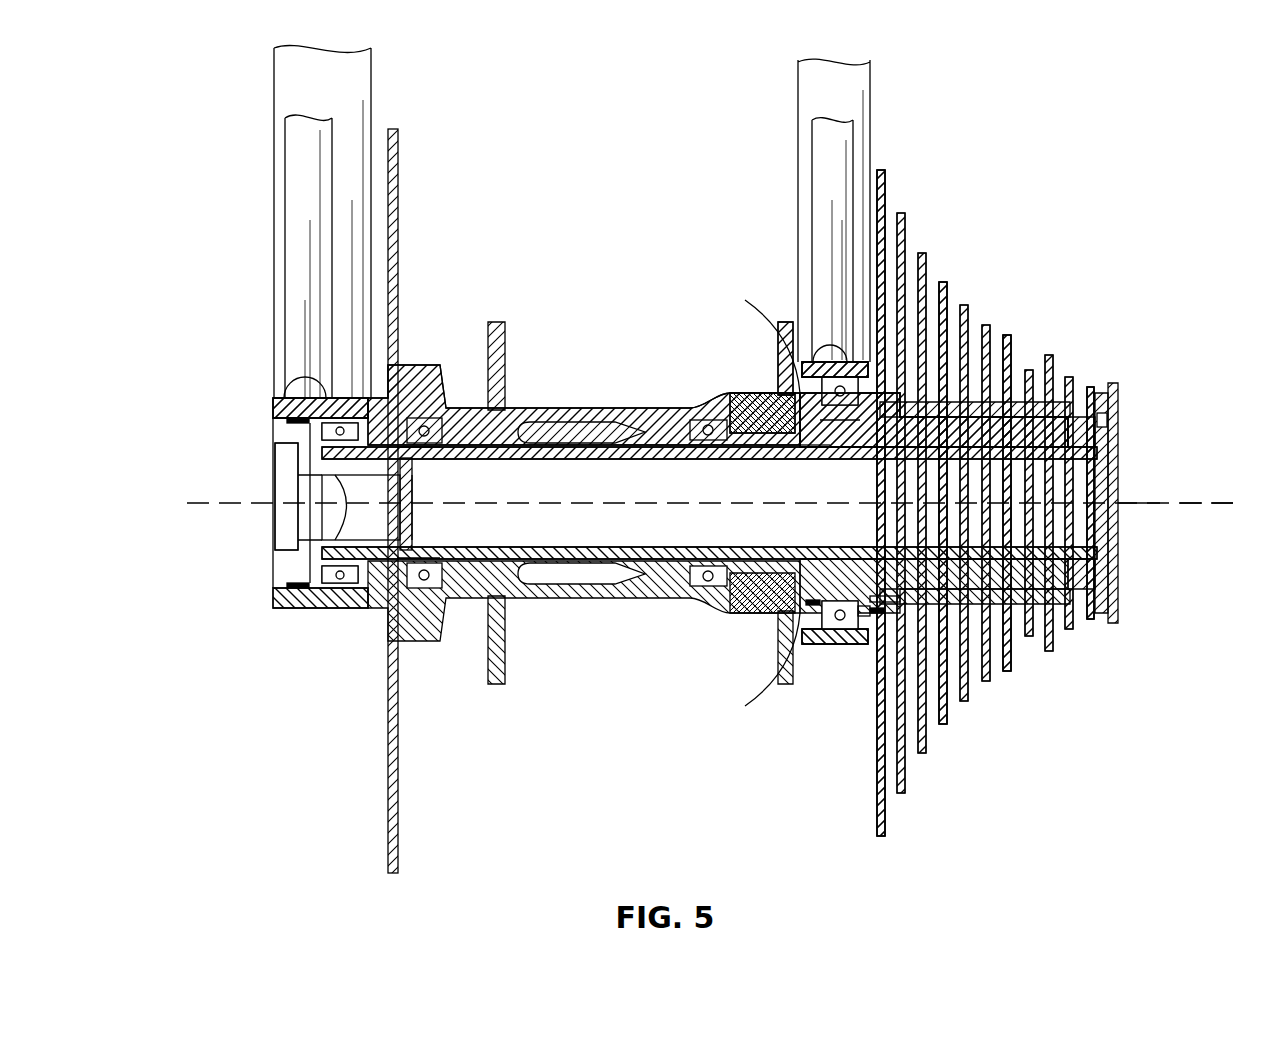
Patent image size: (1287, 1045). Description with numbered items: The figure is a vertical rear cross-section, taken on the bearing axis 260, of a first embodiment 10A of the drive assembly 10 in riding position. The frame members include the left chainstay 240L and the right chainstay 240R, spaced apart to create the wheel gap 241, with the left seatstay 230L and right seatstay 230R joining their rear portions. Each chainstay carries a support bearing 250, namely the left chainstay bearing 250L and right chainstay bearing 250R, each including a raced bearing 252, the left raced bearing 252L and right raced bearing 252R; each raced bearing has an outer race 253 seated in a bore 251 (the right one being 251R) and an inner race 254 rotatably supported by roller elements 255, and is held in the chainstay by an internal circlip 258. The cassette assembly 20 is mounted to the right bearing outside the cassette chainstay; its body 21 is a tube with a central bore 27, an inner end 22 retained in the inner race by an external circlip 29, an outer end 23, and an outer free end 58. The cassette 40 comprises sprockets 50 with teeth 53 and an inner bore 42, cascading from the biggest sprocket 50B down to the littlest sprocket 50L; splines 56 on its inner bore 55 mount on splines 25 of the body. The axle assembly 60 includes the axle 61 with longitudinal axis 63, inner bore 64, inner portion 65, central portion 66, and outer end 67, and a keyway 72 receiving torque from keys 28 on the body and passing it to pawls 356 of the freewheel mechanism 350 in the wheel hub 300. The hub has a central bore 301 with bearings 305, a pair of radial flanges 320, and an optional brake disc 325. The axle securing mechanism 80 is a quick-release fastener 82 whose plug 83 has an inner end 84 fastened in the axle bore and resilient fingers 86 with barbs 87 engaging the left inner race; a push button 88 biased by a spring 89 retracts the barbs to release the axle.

The drive assembly 10 is at (1126, 240).
The first embodiment of drive assembly 10A is at (1150, 267).
The cassette assembly 20 is at (1158, 305).
The cassette body 21 is at (993, 438).
The inner end of cassette body 22 is at (836, 430).
The outer end of body 23 is at (1118, 345).
The splines on outer surface of body 25 is at (956, 414).
The central bore of cassette body 27 is at (1050, 440).
The splines or keys on inner end of body 28 is at (805, 446).
The external circlip 29 is at (778, 365).
The cassette 40 is at (958, 268).
The inner bore of sprockets 42 is at (1018, 438).
The sprocket 50 is at (886, 186).
The biggest sprocket 50B is at (884, 172).
The littlest sprocket 50L is at (1098, 420).
The teeth 53 is at (946, 300).
The inner bore of cassette 55 is at (950, 462).
The splines on cassette inner bore 56 is at (935, 410).
The outer free end of cassette body 58 is at (1110, 410).
The axle assembly 60 is at (1173, 434).
The axle 61 is at (612, 538).
The longitudinal axis 63 is at (1157, 507).
The inner bore of axle 64 is at (848, 538).
The inner portion of axle 65 is at (410, 578).
The central portion of axle 66 is at (700, 545).
The outer end of axle 67 is at (1052, 557).
The keyway 72 is at (530, 447).
The axle securing mechanism 80 is at (166, 473).
The quick-release fastener 82 is at (166, 504).
The plug 83 is at (455, 496).
The inner end of plug 84 is at (412, 536).
The resilient fingers 86 is at (345, 500).
The barbs 87 is at (306, 472).
The push button 88 is at (280, 480).
The spring 89 is at (292, 398).
The left seatstay 230L is at (292, 160).
The right seatstay 230R is at (848, 132).
The left chainstay 240L is at (290, 90).
The right chainstay 240R is at (858, 88).
The wheel gap 241 is at (574, 141).
The bearing 250 is at (276, 620).
The left chainstay bearing 250L is at (294, 626).
The right chainstay bearing 250R is at (810, 672).
The bore 251 is at (280, 590).
The right bearing cap 251R is at (806, 645).
The raced bearing 252 is at (340, 585).
The left raced bearing 252L is at (355, 600).
The right raced bearing 252R is at (868, 618).
The outer race 253 is at (870, 616).
The inner race 254 is at (884, 603).
The roller elements 255 is at (300, 578).
The internal circlip 258 is at (295, 420).
The bearing axis 260 is at (1200, 507).
The wheel hub 300 is at (474, 212).
The central bore of wheel hub 301 is at (425, 455).
The hub bearings 305 is at (422, 425).
The radial flanges 320 is at (497, 324).
The disc 325 is at (397, 150).
The freewheel mechanism 350 is at (740, 364).
The pawls 356 is at (758, 440).